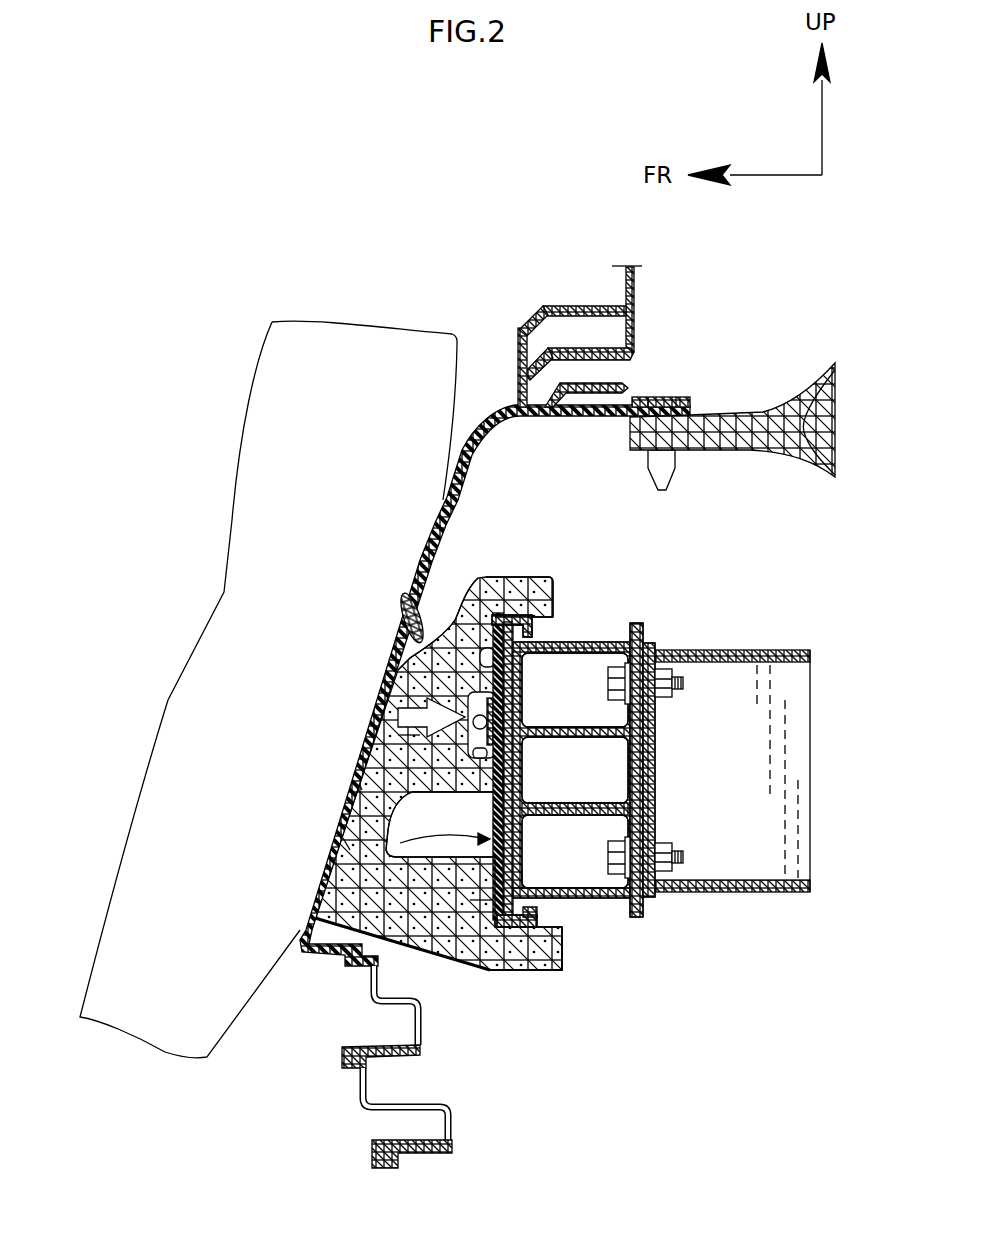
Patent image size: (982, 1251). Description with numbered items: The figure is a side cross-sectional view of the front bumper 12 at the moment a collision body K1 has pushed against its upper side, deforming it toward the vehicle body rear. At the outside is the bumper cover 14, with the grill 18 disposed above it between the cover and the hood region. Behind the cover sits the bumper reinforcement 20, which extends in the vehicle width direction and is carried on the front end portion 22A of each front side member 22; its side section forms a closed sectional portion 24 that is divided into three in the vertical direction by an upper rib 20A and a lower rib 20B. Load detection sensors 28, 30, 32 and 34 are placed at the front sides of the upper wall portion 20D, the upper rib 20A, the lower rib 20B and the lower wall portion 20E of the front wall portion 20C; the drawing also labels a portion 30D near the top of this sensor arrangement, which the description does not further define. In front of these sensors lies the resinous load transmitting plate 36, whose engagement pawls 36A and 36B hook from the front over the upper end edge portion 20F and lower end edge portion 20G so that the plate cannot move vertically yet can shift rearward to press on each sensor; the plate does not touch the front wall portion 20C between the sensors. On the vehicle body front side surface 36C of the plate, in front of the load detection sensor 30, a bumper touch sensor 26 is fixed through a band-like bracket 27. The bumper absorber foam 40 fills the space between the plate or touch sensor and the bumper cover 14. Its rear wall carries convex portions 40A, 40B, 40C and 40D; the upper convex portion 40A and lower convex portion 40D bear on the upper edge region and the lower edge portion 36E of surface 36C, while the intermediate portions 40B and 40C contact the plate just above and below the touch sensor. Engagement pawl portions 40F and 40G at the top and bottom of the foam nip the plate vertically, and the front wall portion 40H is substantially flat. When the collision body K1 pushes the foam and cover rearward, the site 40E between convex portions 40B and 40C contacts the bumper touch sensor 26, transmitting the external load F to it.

The collision body K1 is at (166, 688).
The front bumper 12 is at (484, 355).
The bumper cover 14 is at (472, 458).
The grill 18 is at (623, 292).
The bumper reinforcement 20 is at (609, 630).
The upper rib 20A is at (636, 626).
The lower rib 20B is at (607, 810).
The front wall portion 20C is at (495, 822).
The upper wall portion 20D is at (592, 640).
The lower wall portion 20E is at (627, 898).
The upper end edge portion 20F is at (517, 614).
The lower end edge portion 20G is at (522, 928).
The front side member 22 is at (775, 644).
The front end portion 22A is at (656, 755).
The closed sectional portion 24 is at (624, 711).
The bumper touch sensor 26 is at (393, 713).
The band-like bracket 27 is at (400, 661).
The load detection sensor 28 is at (522, 668).
The load detection sensor 30 is at (521, 762).
The upper end of rib 30D is at (510, 613).
The load detection sensor 32 is at (523, 828).
The load detection sensor 34 is at (523, 884).
The load transmitting plate 36 is at (322, 874).
The engagement pawl 36A is at (533, 628).
The engagement pawl 36B is at (563, 965).
The vehicle body front side surface 36C is at (343, 838).
The lower edge portion 36E is at (500, 966).
The bumper absorber foam 40 is at (448, 618).
The upper convex portion 40A is at (449, 622).
The convex portion 40B is at (512, 713).
The convex portion 40C is at (512, 785).
The lower convex portion 40D is at (483, 888).
The site between convex portions 40E is at (397, 737).
The engagement pawl portion 40F is at (549, 577).
The engagement pawl portion 40G is at (565, 962).
The front wall portion 40H is at (355, 775).
The load F is at (390, 710).